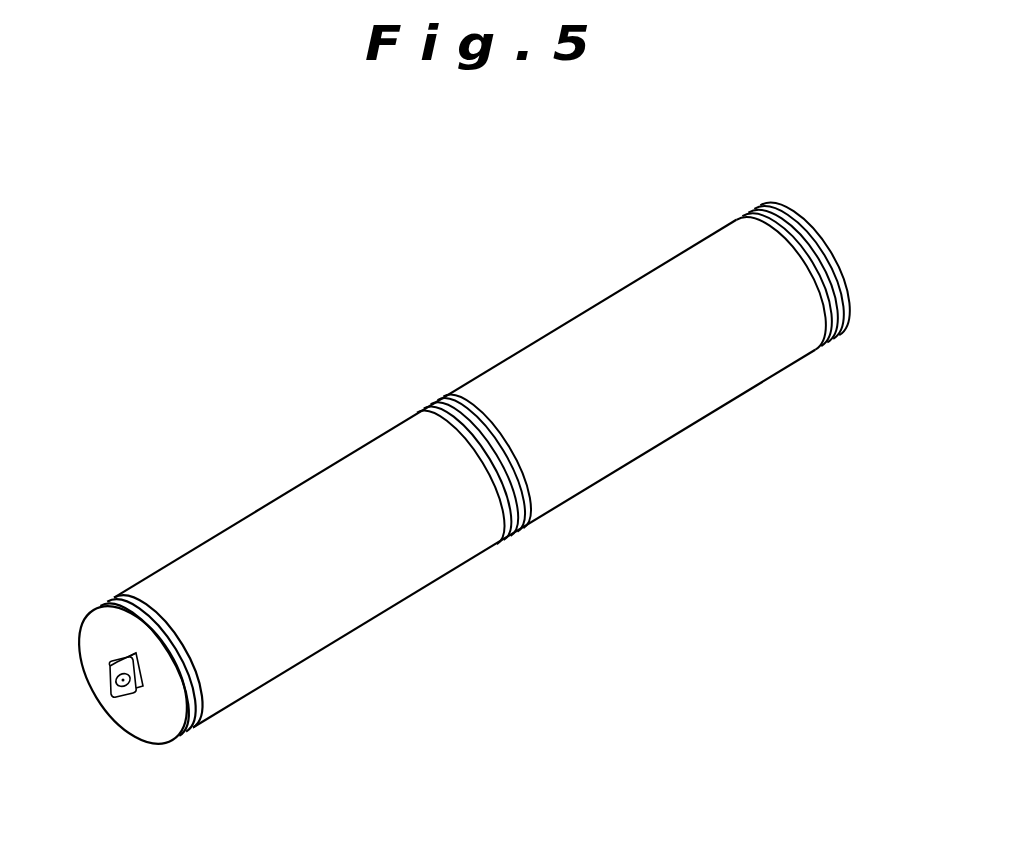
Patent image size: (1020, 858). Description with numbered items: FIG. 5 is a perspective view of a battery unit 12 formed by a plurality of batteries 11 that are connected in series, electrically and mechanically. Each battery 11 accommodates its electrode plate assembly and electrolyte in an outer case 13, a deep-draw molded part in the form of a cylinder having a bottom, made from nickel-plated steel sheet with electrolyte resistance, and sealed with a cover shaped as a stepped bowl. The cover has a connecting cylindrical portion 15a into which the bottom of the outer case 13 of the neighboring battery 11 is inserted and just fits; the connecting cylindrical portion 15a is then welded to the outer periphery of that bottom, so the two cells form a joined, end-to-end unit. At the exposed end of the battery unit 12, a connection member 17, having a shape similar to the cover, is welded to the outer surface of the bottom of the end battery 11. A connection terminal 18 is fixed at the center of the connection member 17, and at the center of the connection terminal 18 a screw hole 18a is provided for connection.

The battery 11 is at (499, 457).
The battery unit 12 is at (609, 400).
The outer case 13 is at (388, 585).
The connecting cylindrical portion 15a is at (525, 510).
The connection member 17 is at (139, 699).
The connection terminal 18 is at (101, 729).
The screw hole 18a is at (115, 688).